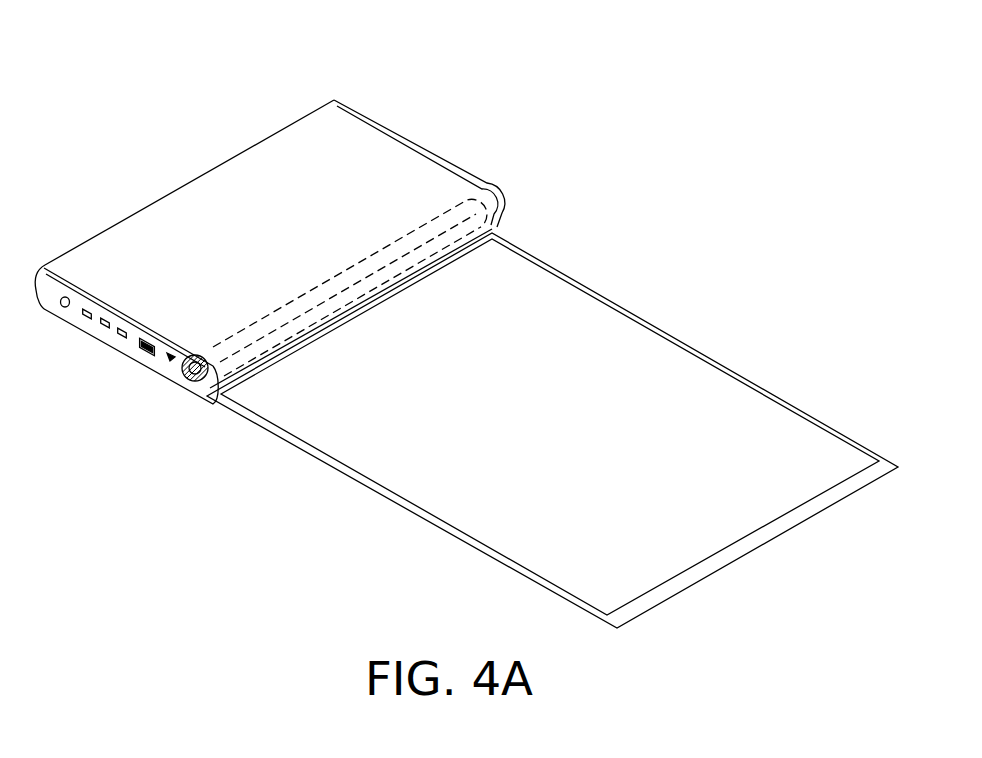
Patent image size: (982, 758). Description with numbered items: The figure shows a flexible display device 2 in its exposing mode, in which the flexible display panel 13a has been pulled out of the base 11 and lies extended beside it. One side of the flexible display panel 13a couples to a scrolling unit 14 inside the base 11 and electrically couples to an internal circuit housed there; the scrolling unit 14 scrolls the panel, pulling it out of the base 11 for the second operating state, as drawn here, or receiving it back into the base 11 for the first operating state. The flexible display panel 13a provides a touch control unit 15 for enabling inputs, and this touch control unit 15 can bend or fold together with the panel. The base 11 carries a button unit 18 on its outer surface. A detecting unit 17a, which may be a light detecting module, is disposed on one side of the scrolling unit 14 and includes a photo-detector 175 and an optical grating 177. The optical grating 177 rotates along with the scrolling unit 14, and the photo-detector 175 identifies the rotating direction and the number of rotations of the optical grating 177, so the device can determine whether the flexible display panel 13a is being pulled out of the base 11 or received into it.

The flexible display device 2 is at (653, 80).
The base 11 is at (233, 157).
The scrolling unit 14 is at (444, 216).
The touch control unit 15 is at (652, 297).
The flexible display panel 13a is at (744, 372).
The button unit 18 is at (102, 322).
The detecting unit 17a is at (160, 425).
The photo-detector 175 is at (172, 366).
The optical grating 177 is at (191, 411).